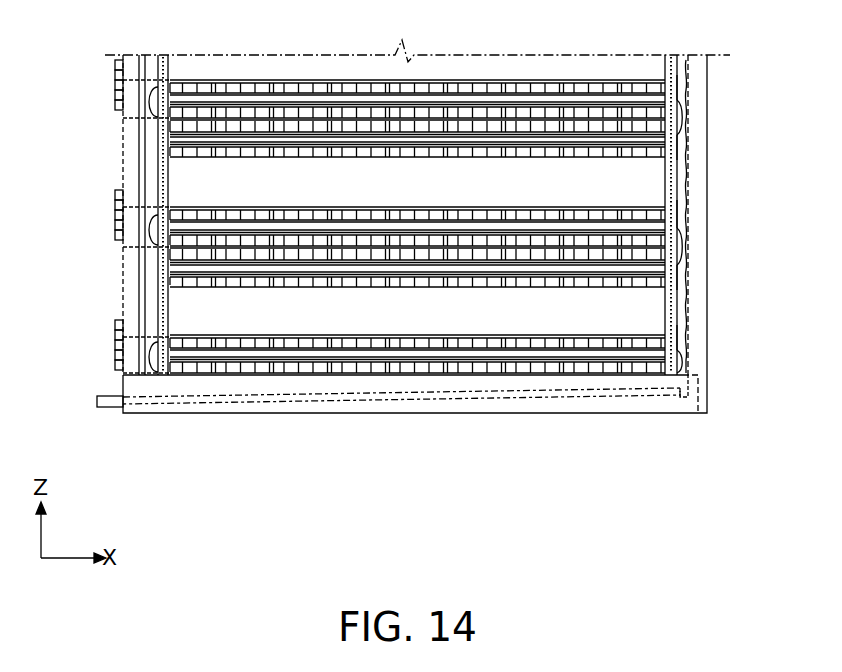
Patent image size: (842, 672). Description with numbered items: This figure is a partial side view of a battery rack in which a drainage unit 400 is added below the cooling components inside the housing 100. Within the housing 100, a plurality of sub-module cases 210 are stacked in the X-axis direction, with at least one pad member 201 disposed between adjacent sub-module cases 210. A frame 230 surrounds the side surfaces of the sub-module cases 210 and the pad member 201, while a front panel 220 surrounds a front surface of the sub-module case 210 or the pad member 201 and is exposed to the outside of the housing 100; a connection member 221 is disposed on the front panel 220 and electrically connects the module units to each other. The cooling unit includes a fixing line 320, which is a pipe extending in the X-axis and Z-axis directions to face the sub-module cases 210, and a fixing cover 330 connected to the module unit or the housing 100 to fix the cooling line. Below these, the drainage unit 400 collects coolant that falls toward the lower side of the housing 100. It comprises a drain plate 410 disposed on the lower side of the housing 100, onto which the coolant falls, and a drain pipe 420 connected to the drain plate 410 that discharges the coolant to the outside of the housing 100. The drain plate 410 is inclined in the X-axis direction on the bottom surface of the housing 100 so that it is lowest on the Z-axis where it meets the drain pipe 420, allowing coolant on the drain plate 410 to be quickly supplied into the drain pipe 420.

The housing 100 is at (701, 113).
The pad member 201 is at (625, 238).
The sub-module case 210 is at (670, 257).
The front panel 220 is at (130, 136).
The connection member 221 is at (115, 196).
The frame 230 is at (152, 176).
The fixing line 320 is at (618, 173).
The fixing cover 330 is at (678, 140).
The drainage unit 400 is at (183, 467).
The drain plate 410 is at (188, 405).
The drain pipe 420 is at (108, 410).